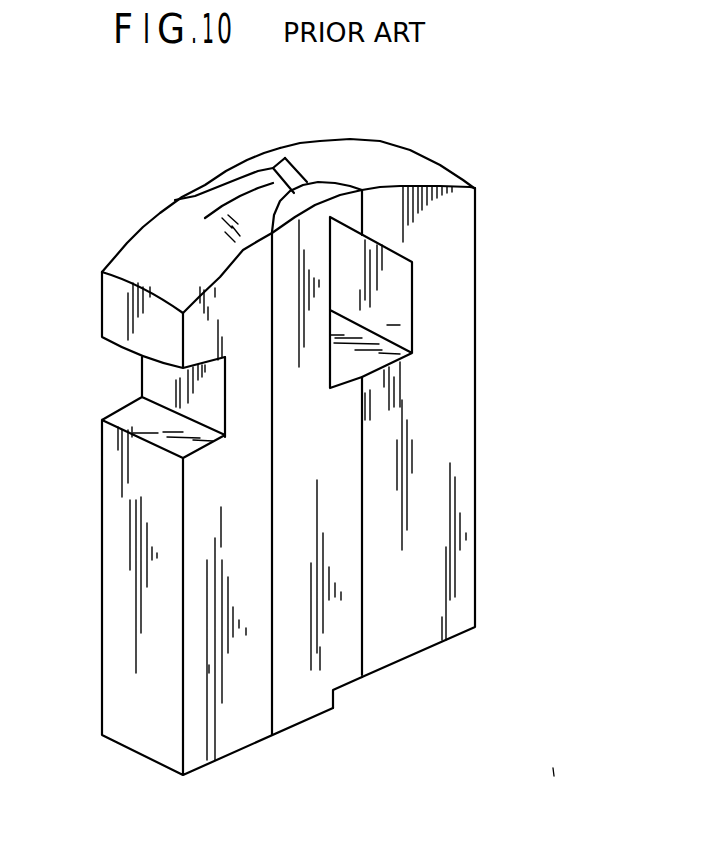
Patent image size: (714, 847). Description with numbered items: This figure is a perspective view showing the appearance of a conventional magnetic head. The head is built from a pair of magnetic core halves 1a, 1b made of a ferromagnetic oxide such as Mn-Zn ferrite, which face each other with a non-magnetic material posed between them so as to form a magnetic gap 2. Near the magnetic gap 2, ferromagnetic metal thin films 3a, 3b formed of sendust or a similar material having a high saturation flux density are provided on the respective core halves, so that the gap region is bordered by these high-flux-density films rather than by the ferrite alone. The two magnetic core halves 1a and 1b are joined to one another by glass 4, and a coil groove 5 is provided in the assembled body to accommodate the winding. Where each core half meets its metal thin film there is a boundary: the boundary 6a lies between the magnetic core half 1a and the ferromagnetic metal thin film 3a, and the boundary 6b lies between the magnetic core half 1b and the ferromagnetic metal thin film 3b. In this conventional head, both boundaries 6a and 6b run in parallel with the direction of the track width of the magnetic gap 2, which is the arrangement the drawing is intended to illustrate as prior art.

The magnetic core half 1a is at (143, 722).
The magnetic core half 1b is at (425, 592).
The magnetic gap 2 is at (271, 163).
The ferromagnetic metal thin film 3a is at (175, 200).
The ferromagnetic metal thin film 3b is at (299, 185).
The glass 4 is at (250, 161).
The coil groove 5 is at (388, 322).
The boundary 6a is at (205, 218).
The boundary 6b is at (287, 172).